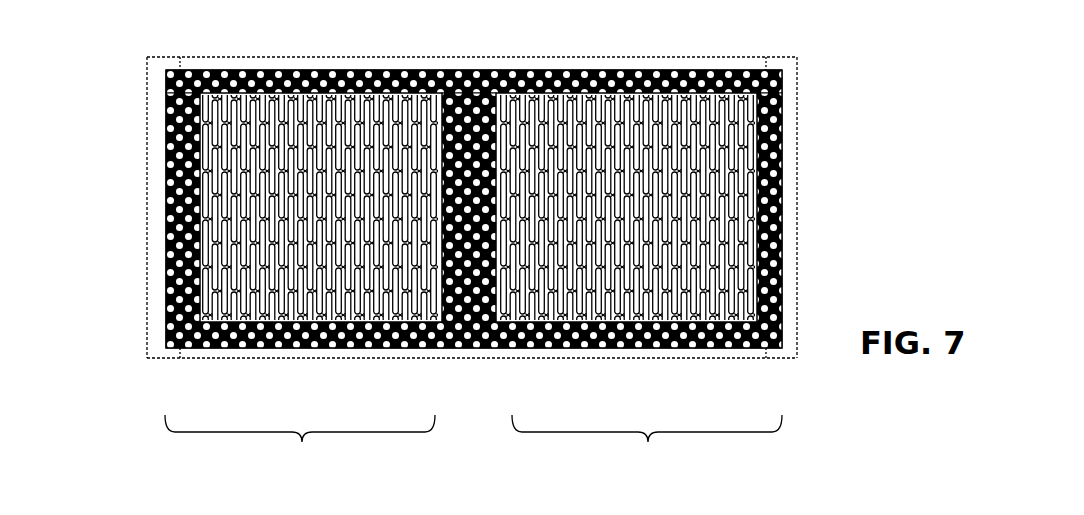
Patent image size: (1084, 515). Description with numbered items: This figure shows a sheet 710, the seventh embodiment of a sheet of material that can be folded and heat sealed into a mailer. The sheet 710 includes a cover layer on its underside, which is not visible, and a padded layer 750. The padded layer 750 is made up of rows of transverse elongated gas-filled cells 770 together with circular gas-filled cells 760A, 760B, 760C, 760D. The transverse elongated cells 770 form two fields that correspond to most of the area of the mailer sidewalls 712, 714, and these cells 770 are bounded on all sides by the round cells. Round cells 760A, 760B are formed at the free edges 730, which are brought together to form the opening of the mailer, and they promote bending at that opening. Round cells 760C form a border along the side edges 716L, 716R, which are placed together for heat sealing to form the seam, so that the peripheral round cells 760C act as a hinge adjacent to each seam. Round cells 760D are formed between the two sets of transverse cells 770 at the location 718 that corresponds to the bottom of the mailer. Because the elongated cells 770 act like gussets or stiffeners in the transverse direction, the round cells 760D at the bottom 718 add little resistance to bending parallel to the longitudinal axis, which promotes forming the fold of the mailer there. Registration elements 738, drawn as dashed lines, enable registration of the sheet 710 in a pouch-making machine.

The sheet 710 is at (845, 52).
The mailer sidewall 712 is at (300, 442).
The mailer sidewall 714 is at (647, 442).
The side edge 716L is at (720, 67).
The side edge 716R is at (410, 358).
The bottom location 718 is at (167, 143).
The free edge 730 is at (167, 200).
The registration element 738 is at (167, 113).
The padded layer 750 is at (235, 305).
The round cell 760A is at (173, 237).
The round cell 760B is at (773, 217).
The round cell 760C is at (165, 73).
The round cell 760D is at (492, 323).
The transverse elongated gas-filled cell 770 is at (217, 275).